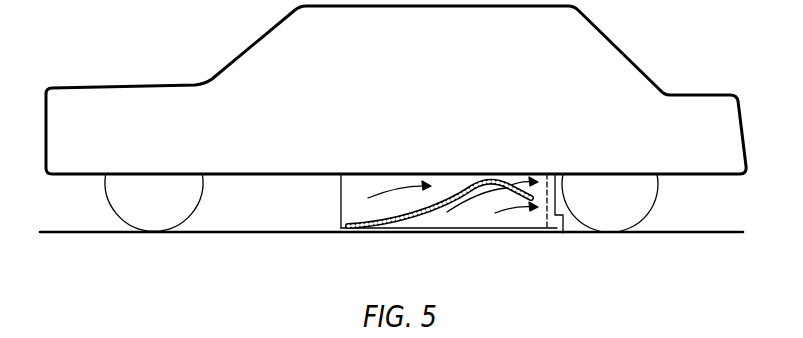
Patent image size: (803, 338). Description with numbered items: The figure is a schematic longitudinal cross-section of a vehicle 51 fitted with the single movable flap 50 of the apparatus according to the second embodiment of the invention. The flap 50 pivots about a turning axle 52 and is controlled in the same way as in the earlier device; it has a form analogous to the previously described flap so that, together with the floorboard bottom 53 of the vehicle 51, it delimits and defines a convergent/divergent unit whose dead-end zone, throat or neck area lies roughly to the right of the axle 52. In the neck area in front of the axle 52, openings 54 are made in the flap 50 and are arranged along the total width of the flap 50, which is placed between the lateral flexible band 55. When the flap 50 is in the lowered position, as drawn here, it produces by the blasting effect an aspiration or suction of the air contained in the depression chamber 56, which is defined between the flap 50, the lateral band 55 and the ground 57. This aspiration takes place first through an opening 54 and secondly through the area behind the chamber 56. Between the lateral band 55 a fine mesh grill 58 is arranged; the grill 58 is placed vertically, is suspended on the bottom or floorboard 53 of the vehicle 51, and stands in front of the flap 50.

The movable flap 50 is at (408, 217).
The vehicle 51 is at (143, 100).
The turning axle 52 is at (477, 192).
The floorboard bottom 53 is at (361, 174).
The openings 54 is at (508, 186).
The lateral flexible band 55 is at (345, 228).
The depression chamber 56 is at (480, 215).
The ground 57 is at (237, 229).
The fine mesh grill 58 is at (563, 230).